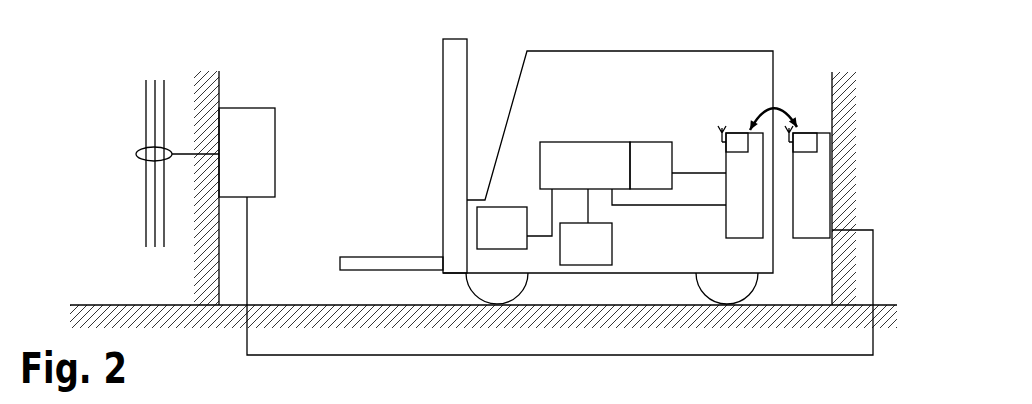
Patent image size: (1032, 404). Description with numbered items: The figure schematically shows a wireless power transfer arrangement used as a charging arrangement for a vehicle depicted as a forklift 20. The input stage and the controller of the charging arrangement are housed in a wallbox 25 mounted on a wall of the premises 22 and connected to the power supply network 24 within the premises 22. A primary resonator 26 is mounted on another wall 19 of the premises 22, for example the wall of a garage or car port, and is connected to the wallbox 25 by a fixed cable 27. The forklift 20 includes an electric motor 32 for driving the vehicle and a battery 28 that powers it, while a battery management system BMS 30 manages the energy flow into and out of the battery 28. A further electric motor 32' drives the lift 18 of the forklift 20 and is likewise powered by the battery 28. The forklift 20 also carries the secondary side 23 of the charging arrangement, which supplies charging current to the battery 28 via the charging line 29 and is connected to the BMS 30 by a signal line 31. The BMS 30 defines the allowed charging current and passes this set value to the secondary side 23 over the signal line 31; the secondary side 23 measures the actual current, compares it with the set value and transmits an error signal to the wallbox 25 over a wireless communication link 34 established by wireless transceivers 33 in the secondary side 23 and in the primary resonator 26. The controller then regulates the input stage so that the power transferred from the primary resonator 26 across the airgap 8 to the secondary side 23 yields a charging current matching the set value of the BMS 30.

The airgap 8 is at (785, 215).
The lift 18 is at (405, 257).
The wall 19 is at (852, 132).
The forklift 20 is at (710, 50).
The premises 22 is at (145, 188).
The secondary side 23 is at (744, 185).
The power supply network 24 is at (146, 218).
The wallbox 25 is at (247, 152).
The primary resonator 26 is at (811, 185).
The fixed cable 27 is at (245, 348).
The battery 28 is at (585, 165).
The charging line 29 is at (693, 208).
The battery management system BMS 30 is at (651, 165).
The signal line 31 is at (690, 168).
The electric motor 32 is at (586, 227).
The further electric motor 32' is at (514, 219).
The wireless transceivers 33 is at (739, 128).
The wireless communication link 34 is at (777, 98).